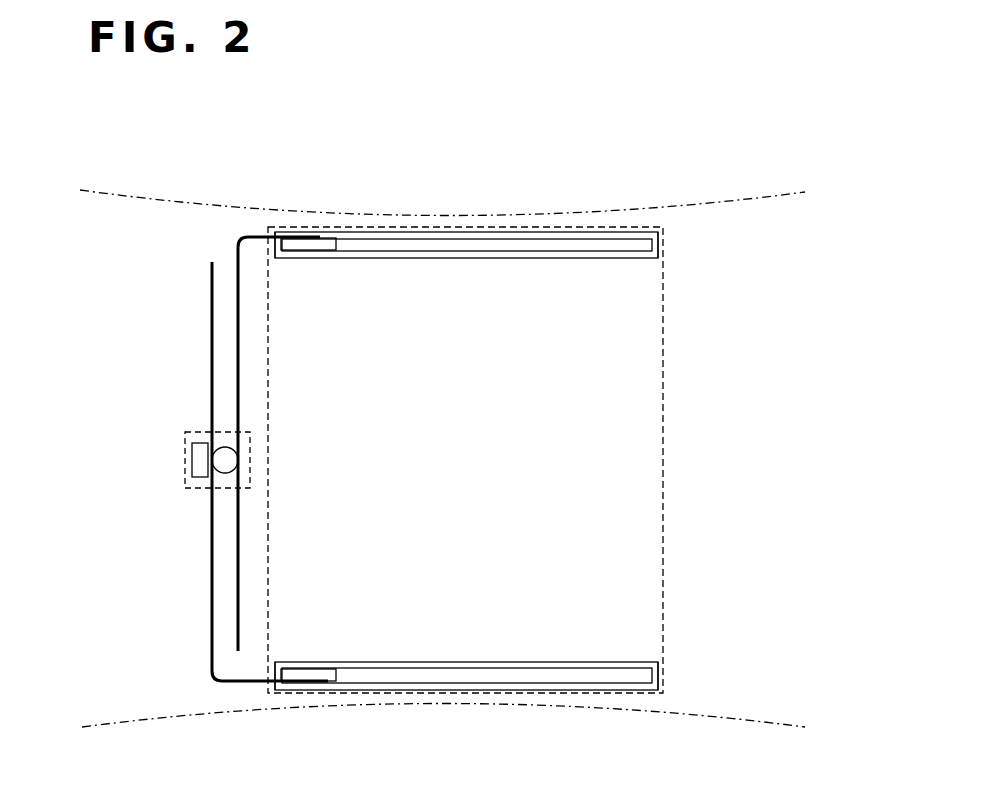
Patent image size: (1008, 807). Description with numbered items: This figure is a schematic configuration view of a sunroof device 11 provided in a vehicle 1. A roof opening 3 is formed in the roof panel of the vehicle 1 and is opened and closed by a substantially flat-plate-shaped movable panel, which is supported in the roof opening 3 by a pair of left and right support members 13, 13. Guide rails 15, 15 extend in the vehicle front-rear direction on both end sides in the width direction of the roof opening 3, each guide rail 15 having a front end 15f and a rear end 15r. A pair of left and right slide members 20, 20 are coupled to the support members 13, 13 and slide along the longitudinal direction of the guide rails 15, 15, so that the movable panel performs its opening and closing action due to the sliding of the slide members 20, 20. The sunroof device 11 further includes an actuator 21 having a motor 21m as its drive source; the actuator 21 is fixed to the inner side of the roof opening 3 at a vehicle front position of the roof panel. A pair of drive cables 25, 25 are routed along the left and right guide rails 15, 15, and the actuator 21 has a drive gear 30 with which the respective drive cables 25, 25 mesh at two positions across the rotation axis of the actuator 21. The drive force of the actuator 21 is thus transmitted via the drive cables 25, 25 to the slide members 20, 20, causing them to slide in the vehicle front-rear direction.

The vehicle 1 is at (130, 194).
The roof opening 3 is at (663, 468).
The sunroof device 11 is at (120, 662).
The support member 13 is at (508, 258).
The guide rail 15 is at (475, 231).
The front end of guide rail 15f is at (280, 232).
The rear end of guide rail 15r is at (655, 232).
The slide member 20 is at (316, 251).
The actuator 21 is at (185, 432).
The motor 21m is at (192, 462).
The drive cable 25 is at (245, 235).
The drive gear 30 is at (238, 453).